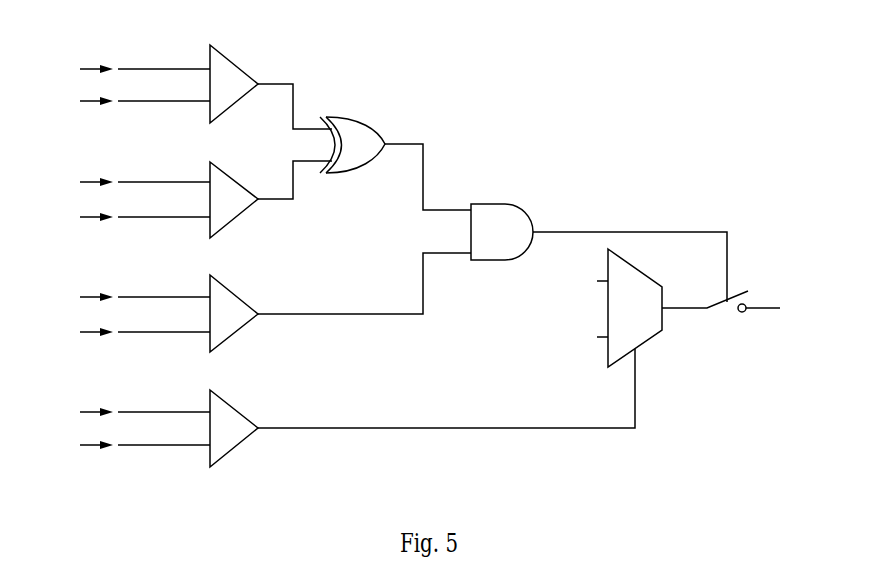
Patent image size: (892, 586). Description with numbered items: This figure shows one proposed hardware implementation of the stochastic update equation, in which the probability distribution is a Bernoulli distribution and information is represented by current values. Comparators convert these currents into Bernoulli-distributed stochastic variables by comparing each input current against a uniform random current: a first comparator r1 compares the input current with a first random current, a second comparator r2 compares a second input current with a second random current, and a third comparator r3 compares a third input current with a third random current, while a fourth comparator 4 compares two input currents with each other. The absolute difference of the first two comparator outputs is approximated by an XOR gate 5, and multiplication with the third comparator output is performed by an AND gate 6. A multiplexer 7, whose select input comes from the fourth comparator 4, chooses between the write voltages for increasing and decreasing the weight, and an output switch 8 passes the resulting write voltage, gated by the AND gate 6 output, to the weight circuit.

The first comparator with reference current i_ r1 is at (183, 85).
The second comparator with reference current i_ r2 is at (183, 196).
The third comparator with reference current i_ r3 is at (252, 302).
The fourth comparator 4 is at (334, 410).
The XOR gate 5 is at (395, 163).
The AND gate 6 is at (599, 253).
The multiplexer 7 is at (605, 308).
The output switch 8 is at (743, 309).